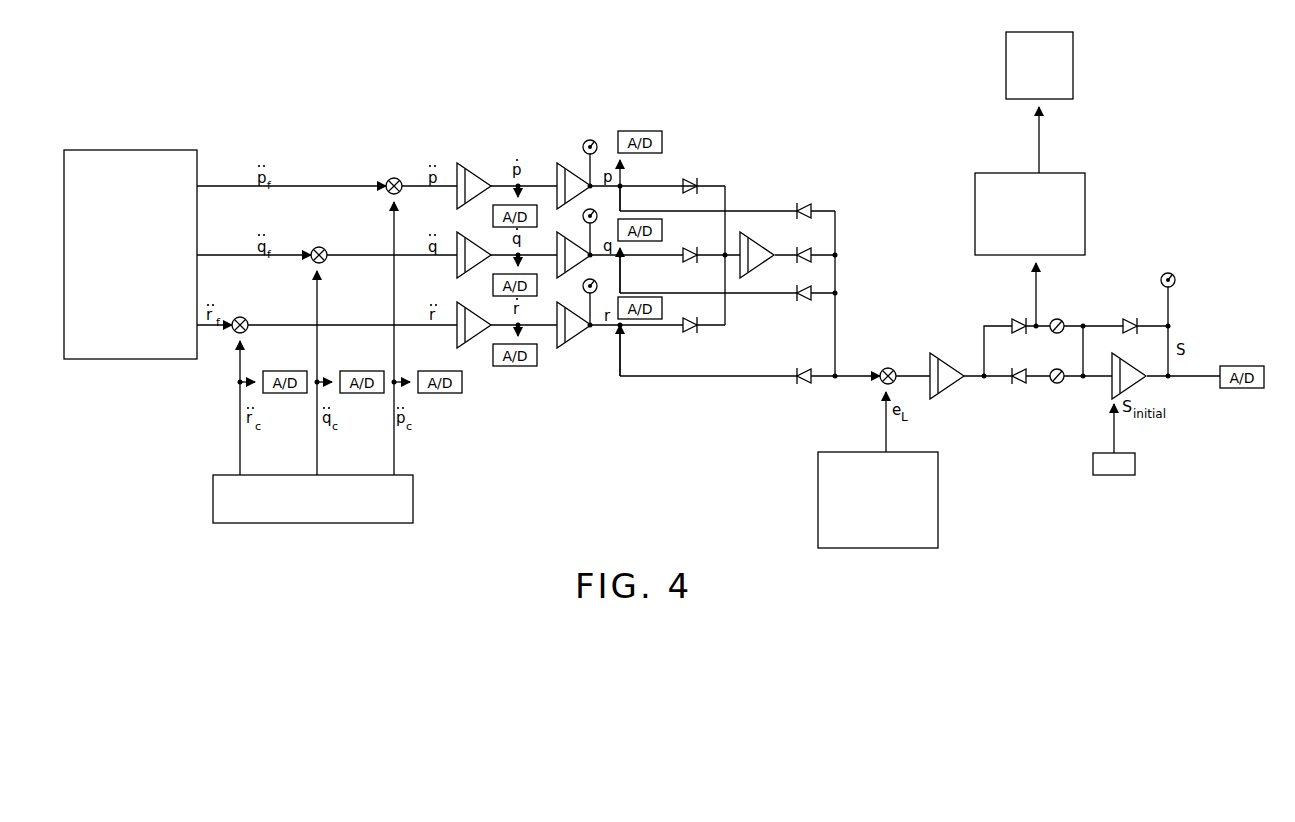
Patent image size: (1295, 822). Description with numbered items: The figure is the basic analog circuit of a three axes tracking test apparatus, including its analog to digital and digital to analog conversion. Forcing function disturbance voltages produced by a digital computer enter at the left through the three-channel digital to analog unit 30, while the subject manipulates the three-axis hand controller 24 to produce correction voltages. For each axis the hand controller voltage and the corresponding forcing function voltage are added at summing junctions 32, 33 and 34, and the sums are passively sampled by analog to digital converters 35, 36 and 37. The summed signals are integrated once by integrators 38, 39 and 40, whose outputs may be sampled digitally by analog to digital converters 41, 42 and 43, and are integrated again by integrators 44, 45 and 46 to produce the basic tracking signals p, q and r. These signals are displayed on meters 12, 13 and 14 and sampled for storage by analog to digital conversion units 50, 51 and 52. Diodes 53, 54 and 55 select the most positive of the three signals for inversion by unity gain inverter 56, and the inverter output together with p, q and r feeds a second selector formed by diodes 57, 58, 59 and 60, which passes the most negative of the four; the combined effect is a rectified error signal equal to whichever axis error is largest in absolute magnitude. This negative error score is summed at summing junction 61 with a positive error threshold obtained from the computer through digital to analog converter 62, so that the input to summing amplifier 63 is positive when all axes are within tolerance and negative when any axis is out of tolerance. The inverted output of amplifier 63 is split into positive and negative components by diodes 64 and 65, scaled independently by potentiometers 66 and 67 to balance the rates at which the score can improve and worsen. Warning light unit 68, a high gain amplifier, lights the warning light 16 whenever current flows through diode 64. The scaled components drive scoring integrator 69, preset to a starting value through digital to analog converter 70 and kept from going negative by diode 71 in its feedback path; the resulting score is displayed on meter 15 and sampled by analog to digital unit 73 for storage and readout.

The meter 12 is at (590, 140).
The meter 13 is at (592, 209).
The meter 14 is at (592, 279).
The meter 15 is at (1176, 281).
The warning light 16 is at (1073, 63).
The three-axis hand controller 24 is at (294, 523).
The 3-channel digital to analog unit 30 is at (130, 150).
The summing junction 32 is at (395, 177).
The summing junction 33 is at (322, 246).
The summing junction 34 is at (244, 316).
The analog to digital converter 35 is at (436, 371).
The analog to digital converter 36 is at (352, 371).
The analog to digital converter 37 is at (276, 371).
The integrator 38 is at (463, 196).
The integrator 39 is at (463, 265).
The integrator 40 is at (463, 332).
The analog to digital converter 41 is at (493, 214).
The analog to digital converter 42 is at (493, 284).
The analog to digital converter 43 is at (524, 366).
The integrator 44 is at (566, 177).
The integrator 45 is at (566, 246).
The integrator 46 is at (566, 316).
The analog to digital conversion unit 50 is at (650, 131).
The analog to digital conversion unit 51 is at (660, 233).
The analog to digital conversion unit 52 is at (661, 309).
The diode 53 is at (695, 182).
The diode 54 is at (698, 252).
The diode 55 is at (699, 322).
The unity gain inverter 56 is at (765, 238).
The diode 57 is at (801, 206).
The diode 58 is at (800, 289).
The diode 59 is at (800, 371).
The diode 60 is at (800, 251).
The summing junction 61 is at (886, 367).
The digital to analog converter 62 is at (826, 499).
The summing amplifier 63 is at (944, 362).
The diode 64 is at (1017, 319).
The diode 65 is at (1017, 385).
The potentiometer 66 is at (1062, 320).
The potentiometer 67 is at (1054, 387).
The warning light unit 68 is at (1085, 205).
The scoring integrator 69 is at (1117, 385).
The digital to analog converter 70 is at (1136, 466).
The diode 71 is at (1135, 319).
The analog to digital unit 73 is at (1264, 378).